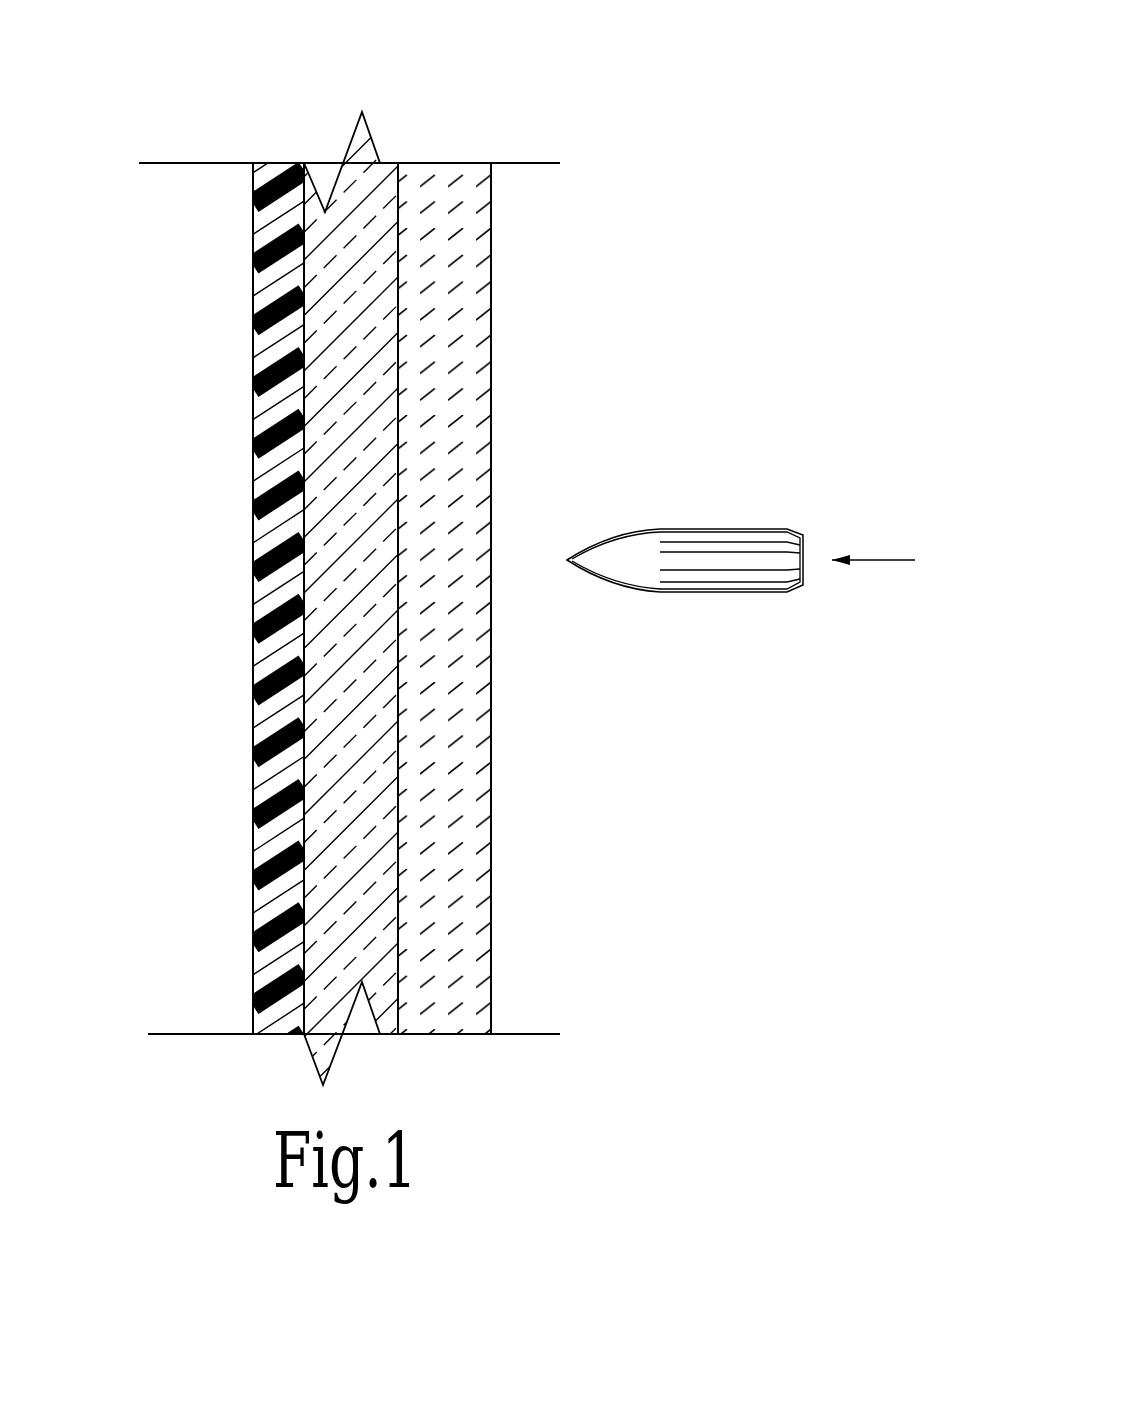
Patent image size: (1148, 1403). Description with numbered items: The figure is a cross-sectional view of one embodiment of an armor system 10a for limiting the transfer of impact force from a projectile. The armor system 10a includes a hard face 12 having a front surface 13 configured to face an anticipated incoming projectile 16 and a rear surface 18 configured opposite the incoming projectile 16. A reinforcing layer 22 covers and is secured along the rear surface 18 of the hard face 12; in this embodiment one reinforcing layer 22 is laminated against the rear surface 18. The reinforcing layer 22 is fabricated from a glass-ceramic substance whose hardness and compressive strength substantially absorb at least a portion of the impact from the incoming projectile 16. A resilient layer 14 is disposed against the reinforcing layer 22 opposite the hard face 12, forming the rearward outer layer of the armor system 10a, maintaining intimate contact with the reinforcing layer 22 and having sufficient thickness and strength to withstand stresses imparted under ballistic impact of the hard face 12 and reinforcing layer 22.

The armor system 10a is at (540, 85).
The hard face 12 is at (455, 163).
The front surface 13 is at (491, 247).
The resilient layer 14 is at (273, 163).
The incoming projectile 16 is at (687, 529).
The rear surface 18 is at (398, 190).
The reinforcing layer 22 is at (343, 163).